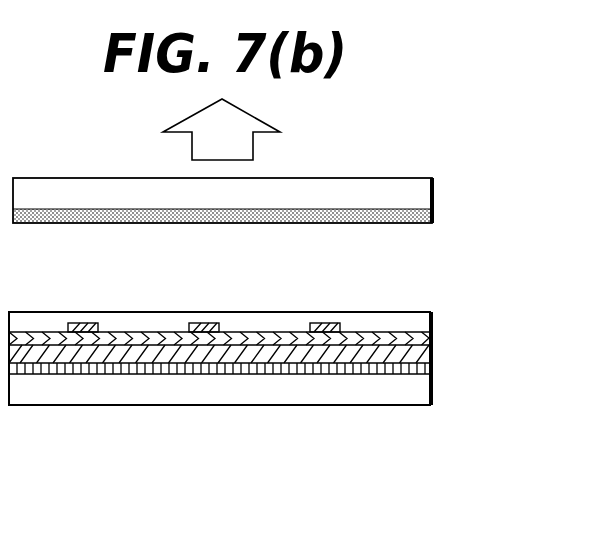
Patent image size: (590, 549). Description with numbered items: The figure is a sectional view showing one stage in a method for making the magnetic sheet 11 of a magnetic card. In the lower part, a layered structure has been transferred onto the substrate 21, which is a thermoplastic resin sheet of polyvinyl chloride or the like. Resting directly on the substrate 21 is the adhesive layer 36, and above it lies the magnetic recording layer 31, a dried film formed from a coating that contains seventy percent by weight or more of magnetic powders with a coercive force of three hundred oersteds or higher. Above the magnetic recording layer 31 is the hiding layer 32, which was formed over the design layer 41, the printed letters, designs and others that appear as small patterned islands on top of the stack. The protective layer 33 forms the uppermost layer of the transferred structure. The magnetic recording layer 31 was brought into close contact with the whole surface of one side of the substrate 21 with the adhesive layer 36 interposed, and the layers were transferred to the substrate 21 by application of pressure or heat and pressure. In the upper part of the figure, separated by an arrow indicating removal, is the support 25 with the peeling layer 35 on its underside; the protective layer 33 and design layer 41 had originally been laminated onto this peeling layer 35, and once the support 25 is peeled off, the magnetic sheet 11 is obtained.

The magnetic sheet 11 is at (518, 257).
The substrate 21 is at (417, 395).
The support 25 is at (420, 195).
The magnetic recording layer 31 is at (422, 351).
The hiding layer 32 is at (432, 340).
The protective layer 33 is at (420, 322).
The peeling layer 35 is at (434, 211).
The adhesive layer 36 is at (423, 368).
The design layer 41 is at (202, 322).